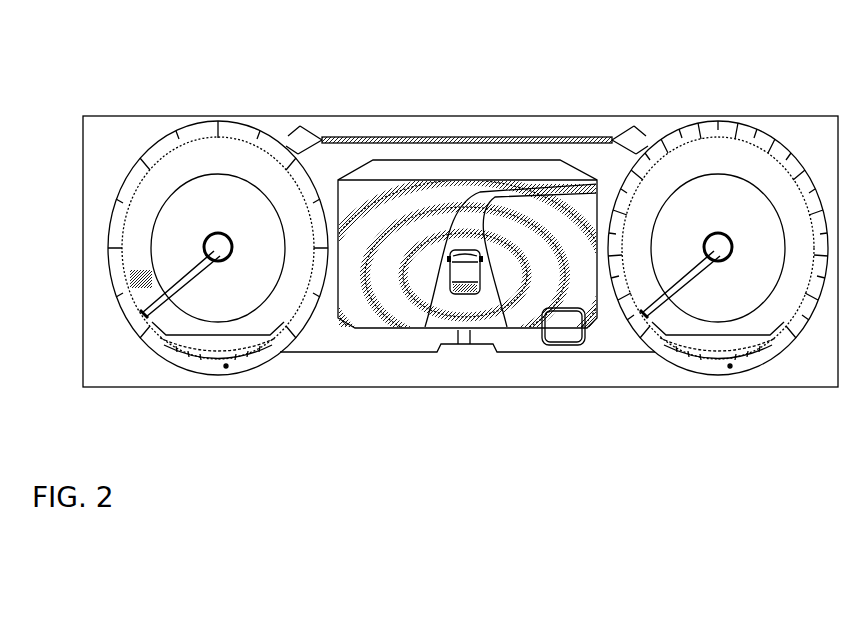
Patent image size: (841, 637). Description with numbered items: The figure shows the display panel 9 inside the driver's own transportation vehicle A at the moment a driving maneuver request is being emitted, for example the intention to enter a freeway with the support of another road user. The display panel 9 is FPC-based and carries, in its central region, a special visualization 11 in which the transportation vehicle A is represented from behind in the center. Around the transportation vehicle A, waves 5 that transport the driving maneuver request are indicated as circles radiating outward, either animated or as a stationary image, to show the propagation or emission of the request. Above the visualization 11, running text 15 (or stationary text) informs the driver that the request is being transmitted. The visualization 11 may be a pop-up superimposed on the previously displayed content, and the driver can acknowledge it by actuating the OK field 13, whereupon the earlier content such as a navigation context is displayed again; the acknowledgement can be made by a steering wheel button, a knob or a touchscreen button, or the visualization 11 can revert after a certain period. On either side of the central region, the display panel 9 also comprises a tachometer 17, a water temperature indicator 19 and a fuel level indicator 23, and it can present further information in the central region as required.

The waves 5 is at (417, 300).
The display panel 9 is at (817, 117).
The visualization 11 is at (485, 90).
The OK field 13 is at (560, 340).
The running text 15 is at (535, 117).
The tachometer 17 is at (190, 330).
The water temperature indicator 19 is at (226, 367).
The fuel level indicator 23 is at (730, 367).
The transportation vehicle A is at (463, 282).